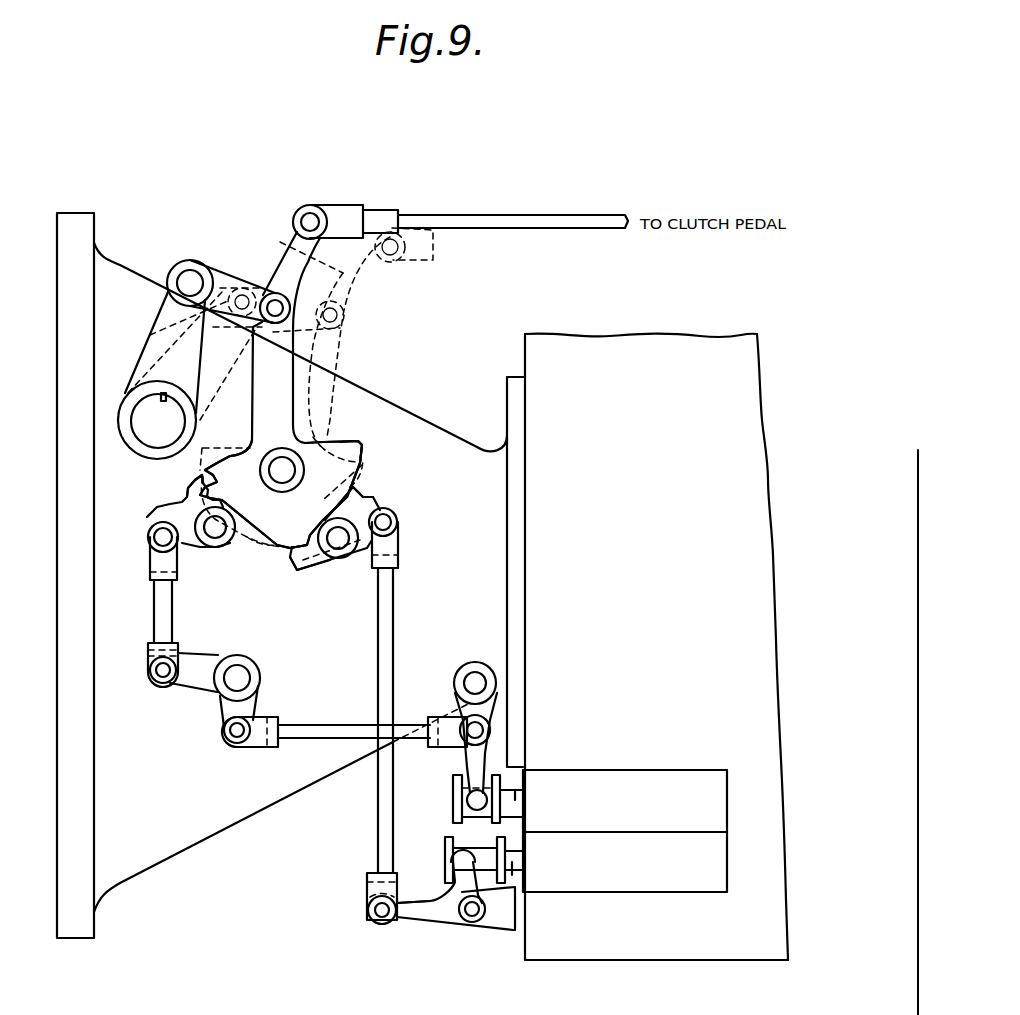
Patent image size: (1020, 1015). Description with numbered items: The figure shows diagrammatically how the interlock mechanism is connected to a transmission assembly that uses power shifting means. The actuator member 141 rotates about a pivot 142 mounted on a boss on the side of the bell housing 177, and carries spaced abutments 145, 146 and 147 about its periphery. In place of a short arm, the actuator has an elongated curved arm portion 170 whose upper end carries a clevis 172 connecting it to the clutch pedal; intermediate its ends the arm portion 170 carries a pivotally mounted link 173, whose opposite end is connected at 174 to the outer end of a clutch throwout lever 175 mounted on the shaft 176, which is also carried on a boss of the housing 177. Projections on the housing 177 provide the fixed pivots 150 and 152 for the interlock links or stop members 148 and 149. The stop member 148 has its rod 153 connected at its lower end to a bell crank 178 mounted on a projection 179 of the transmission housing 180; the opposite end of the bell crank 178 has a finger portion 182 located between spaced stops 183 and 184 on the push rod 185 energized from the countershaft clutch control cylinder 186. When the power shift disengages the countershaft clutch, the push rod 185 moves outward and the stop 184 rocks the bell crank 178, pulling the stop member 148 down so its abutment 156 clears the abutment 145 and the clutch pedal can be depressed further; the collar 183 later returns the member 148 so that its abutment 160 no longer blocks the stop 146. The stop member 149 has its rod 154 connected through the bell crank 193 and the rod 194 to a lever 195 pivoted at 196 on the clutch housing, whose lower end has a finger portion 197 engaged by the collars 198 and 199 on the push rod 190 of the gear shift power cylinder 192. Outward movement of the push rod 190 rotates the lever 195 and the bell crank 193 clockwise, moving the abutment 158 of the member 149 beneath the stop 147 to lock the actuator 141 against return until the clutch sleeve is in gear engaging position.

The actuator member 141 is at (318, 455).
The pivot 142 is at (283, 462).
The abutment 145 is at (360, 445).
The abutment 146 is at (277, 561).
The abutment 147 is at (216, 484).
The stop member 148 is at (362, 560).
The stop member 149 is at (186, 546).
The fixed pivot 150 is at (340, 559).
The fixed pivot 152 is at (223, 545).
The rod 153 is at (389, 635).
The rod 154 is at (164, 611).
The abutment 156 is at (361, 493).
The abutment 158 is at (197, 481).
The abutment 160 is at (305, 573).
The curved arm portion 170 is at (297, 252).
The clevis 172 is at (360, 207).
The link 173 is at (245, 292).
The connection 174 is at (191, 282).
The clutch throwout lever 175 is at (153, 335).
The shaft 176 is at (142, 413).
The bell housing 177 is at (167, 847).
The bell crank 178 is at (417, 916).
The projection 179 is at (497, 917).
The transmission housing 180 is at (530, 948).
The finger portion 182 is at (455, 858).
The stop 183 is at (448, 842).
The stop 184 is at (480, 862).
The push rod 185 is at (517, 892).
The countershaft clutch control cylinder 186 is at (707, 893).
The push rod 190 is at (515, 787).
The gear shift power cylinder 192 is at (710, 772).
The bell crank 193 is at (195, 681).
The rod 194 is at (307, 730).
The lever 195 is at (490, 712).
The pivot 196 is at (476, 672).
The finger portion 197 is at (467, 799).
The stop collar 198 is at (452, 780).
The stop collar 199 is at (453, 820).